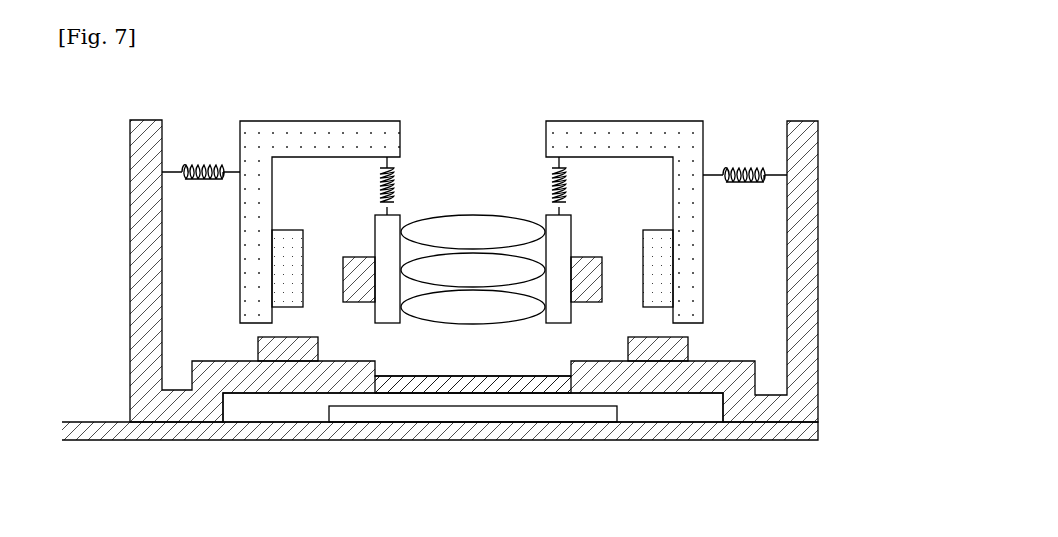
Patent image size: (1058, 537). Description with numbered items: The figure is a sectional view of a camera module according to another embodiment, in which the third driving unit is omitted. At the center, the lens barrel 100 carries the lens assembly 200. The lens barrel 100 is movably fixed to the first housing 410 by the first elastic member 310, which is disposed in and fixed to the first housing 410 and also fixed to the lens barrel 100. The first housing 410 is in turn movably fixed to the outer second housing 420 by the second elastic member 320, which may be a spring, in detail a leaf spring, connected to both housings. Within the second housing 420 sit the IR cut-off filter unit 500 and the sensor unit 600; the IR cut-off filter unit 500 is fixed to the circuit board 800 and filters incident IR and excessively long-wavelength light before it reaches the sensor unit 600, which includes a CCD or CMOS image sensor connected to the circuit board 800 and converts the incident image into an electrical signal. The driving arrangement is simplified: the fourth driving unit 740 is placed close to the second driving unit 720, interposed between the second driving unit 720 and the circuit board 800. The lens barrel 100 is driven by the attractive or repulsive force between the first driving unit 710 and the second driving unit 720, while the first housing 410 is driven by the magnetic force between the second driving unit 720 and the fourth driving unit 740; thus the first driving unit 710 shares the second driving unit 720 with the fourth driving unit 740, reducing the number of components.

The lens barrel 100 is at (388, 318).
The lens assembly 200 is at (472, 208).
The first elastic member 310 is at (402, 184).
The second elastic member 320 is at (748, 158).
The first housing 410 is at (625, 132).
The second housing 420 is at (810, 198).
The IR cut-off filter unit 500 is at (520, 378).
The sensor unit 600 is at (458, 415).
The first driving unit 710 is at (360, 292).
The second driving unit 720 is at (285, 290).
The fourth driving unit 740 is at (300, 352).
The circuit board 800 is at (775, 432).